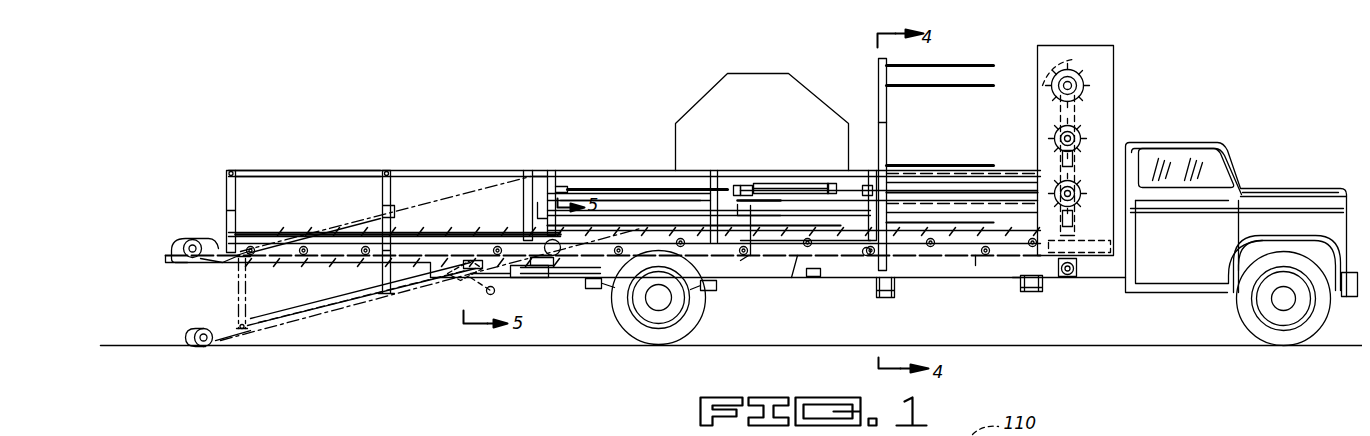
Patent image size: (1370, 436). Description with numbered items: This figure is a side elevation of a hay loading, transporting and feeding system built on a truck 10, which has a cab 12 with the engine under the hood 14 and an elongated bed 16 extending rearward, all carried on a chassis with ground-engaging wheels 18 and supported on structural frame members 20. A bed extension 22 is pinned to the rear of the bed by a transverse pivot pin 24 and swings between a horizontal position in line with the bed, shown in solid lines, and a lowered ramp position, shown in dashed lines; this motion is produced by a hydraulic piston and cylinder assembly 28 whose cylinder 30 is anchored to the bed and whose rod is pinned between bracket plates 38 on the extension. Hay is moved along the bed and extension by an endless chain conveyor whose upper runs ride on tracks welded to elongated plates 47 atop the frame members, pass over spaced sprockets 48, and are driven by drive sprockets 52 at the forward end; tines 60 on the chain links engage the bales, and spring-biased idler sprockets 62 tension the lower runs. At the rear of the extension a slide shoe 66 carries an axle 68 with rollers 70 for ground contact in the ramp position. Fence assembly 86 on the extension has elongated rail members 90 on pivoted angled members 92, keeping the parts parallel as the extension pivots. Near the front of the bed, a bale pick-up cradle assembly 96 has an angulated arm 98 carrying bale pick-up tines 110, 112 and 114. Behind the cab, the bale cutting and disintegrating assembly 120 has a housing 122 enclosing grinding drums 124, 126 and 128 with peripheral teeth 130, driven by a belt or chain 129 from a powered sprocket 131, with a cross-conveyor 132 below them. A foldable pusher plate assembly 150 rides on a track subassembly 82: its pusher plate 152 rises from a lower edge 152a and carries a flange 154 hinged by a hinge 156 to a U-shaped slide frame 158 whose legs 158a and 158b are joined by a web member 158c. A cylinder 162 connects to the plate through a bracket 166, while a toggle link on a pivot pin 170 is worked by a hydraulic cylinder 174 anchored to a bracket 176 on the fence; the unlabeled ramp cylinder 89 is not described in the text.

The truck 10 is at (1231, 156).
The cab 12 is at (1190, 246).
The hood 14 is at (1286, 207).
The bed 16 is at (795, 266).
The ground-engaging wheels 18 is at (628, 322).
The structural frame members 20 is at (906, 268).
The bed extension 22 is at (306, 273).
The pivot pin 24 is at (560, 247).
The hydraulic piston and cylinder assembly 28 is at (498, 293).
The cylinder 30 is at (521, 296).
The bracket plates 38 is at (468, 272).
The elongated plates 47 is at (797, 256).
The sprockets 48 is at (813, 254).
The drive sprockets 52 is at (1022, 256).
The tines 60 is at (250, 230).
The idler sprockets 62 is at (975, 256).
The slide shoe 66 is at (172, 234).
The axle 68 is at (190, 238).
The rollers 70 is at (190, 257).
The track subassembly 82 is at (857, 166).
The fence assembly 86 is at (337, 168).
The ramp cylinder 89 is at (341, 303).
The elongated rail members 90 is at (306, 172).
The angled members 92 is at (388, 188).
The bale pick-up cradle assembly 96 is at (872, 98).
The angulated arm 98 is at (884, 122).
The bale pick-up tine 110 is at (948, 64).
The bale pick-up tine 112 is at (962, 88).
The bale pick-up tine 114 is at (943, 164).
The bale cutting and disintegrating assembly 120 is at (1081, 167).
The housing 122 is at (1105, 67).
The grinding drum 124 is at (1058, 58).
The grinding drum 126 is at (1093, 130).
The grinding drum 128 is at (1052, 164).
The belt or chain 129 is at (1075, 226).
The teeth 130 is at (1088, 57).
The powered sprocket 131 is at (1067, 278).
The cross-conveyor 132 is at (1097, 262).
The foldable pusher plate assembly 150 is at (722, 111).
The pusher plate 152 is at (672, 97).
The lower edge 152a is at (701, 210).
The flange 154 is at (858, 190).
The hinge 156 is at (874, 195).
The U-shaped slide frame 158 is at (748, 262).
The leg 158a is at (736, 184).
The leg 158b is at (776, 201).
The web member 158c is at (852, 250).
The cylinder 162 is at (770, 182).
The bracket 166 is at (831, 182).
The pivot pin 170 is at (748, 184).
The hydraulic cylinder 174 is at (572, 186).
The bracket 176 is at (528, 182).